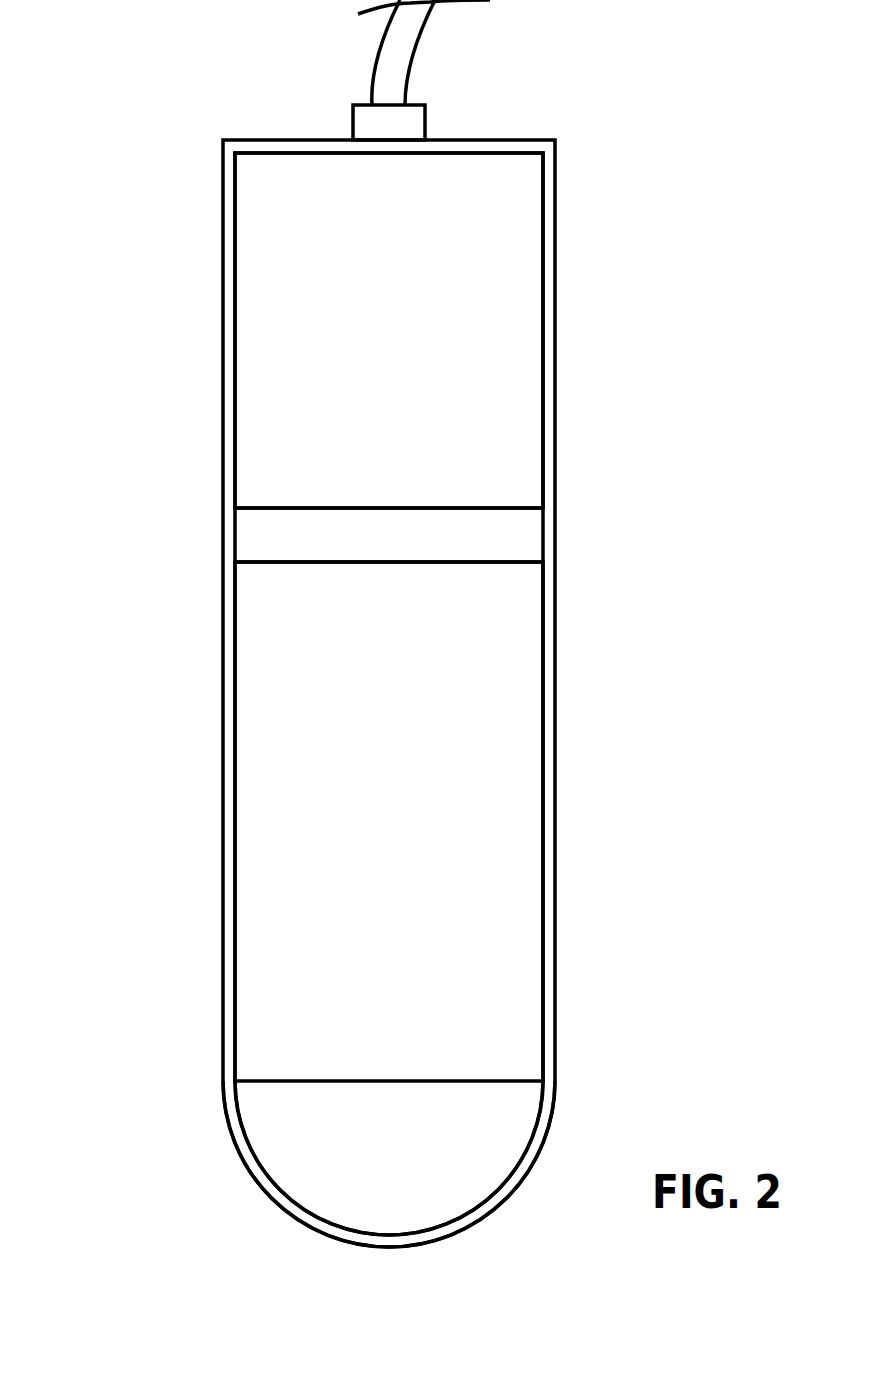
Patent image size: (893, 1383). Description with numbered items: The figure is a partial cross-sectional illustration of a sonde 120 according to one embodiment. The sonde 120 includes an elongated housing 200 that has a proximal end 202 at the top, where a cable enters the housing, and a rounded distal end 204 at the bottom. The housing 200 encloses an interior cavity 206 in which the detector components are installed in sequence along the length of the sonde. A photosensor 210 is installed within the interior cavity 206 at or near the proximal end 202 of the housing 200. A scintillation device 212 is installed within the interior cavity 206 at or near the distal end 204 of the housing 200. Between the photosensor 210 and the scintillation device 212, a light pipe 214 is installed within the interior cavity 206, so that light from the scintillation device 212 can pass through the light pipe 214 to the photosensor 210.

The sonde 120 is at (643, 100).
The housing 200 is at (227, 663).
The proximal end 202 is at (228, 152).
The distal end 204 is at (325, 1223).
The interior cavity 206 is at (400, 1232).
The photosensor 210 is at (507, 309).
The scintillation device 212 is at (255, 933).
The light pipe 214 is at (525, 536).